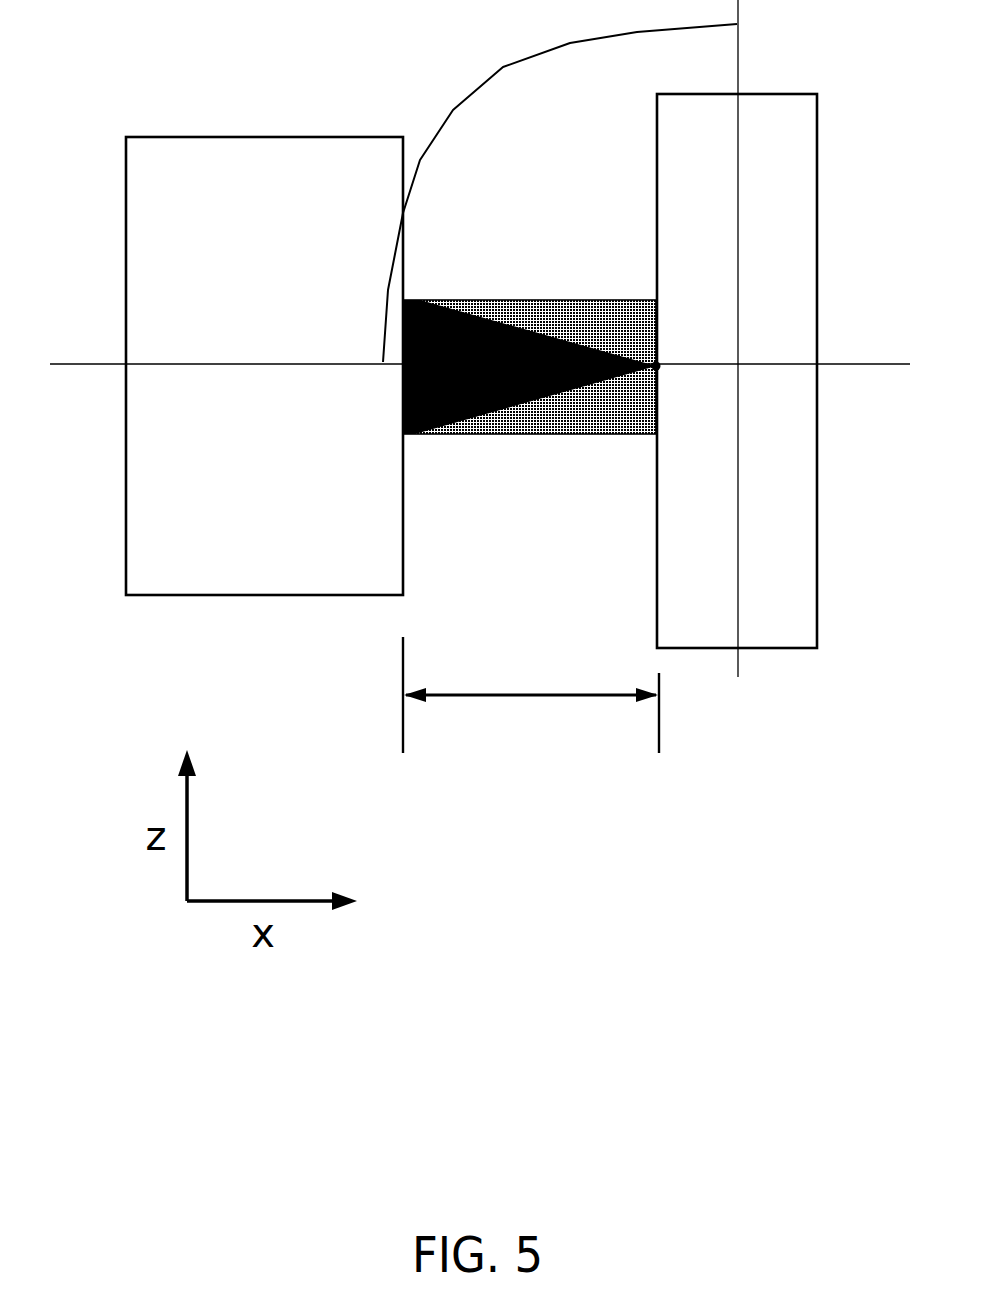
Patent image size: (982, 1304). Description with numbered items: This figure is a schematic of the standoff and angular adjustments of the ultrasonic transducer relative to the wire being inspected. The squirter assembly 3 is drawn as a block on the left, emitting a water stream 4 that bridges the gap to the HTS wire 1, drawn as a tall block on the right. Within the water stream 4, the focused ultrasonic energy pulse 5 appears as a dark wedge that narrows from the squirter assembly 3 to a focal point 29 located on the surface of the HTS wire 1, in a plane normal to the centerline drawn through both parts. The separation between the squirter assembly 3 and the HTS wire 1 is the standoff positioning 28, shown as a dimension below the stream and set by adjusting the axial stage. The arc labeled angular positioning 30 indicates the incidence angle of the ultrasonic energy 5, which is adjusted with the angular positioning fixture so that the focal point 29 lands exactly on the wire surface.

The HTS wire 1 is at (737, 371).
The squirter assembly 3 is at (264, 366).
The water stream 4 is at (519, 434).
The focused ultrasonic energy pulse 5 is at (540, 335).
The standoff positioning 28 is at (531, 695).
The focal point 29 is at (652, 370).
The angular positioning 30 is at (560, 193).